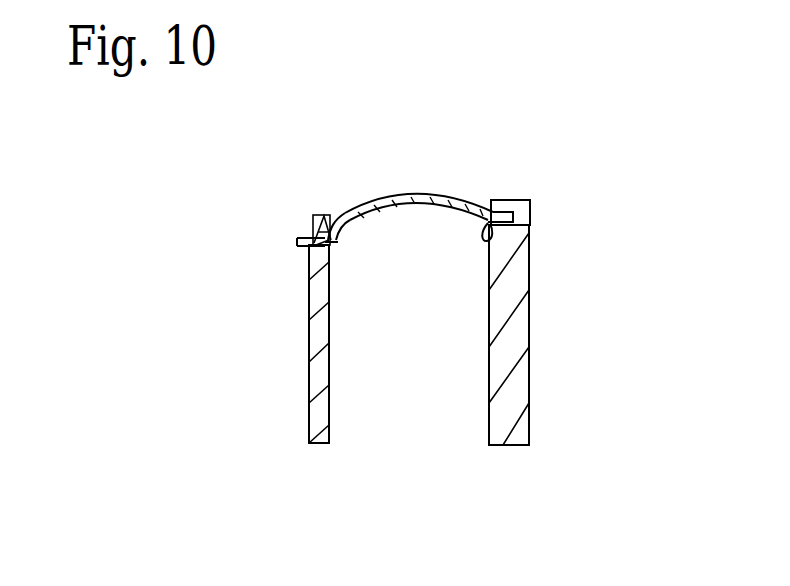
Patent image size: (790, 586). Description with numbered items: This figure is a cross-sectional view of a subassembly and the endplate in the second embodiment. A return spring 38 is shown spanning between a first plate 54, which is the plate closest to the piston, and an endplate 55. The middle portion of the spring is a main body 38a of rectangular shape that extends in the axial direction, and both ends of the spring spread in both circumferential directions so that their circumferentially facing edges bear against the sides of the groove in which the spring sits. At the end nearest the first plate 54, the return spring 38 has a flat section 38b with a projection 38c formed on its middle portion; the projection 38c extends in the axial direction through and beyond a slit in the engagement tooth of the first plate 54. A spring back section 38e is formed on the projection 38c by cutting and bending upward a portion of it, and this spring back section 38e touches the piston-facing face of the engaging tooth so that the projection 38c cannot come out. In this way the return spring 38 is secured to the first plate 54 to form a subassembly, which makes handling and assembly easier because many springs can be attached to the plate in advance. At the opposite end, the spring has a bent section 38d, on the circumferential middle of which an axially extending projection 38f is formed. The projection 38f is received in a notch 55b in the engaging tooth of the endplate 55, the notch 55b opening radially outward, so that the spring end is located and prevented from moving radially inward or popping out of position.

The return spring 38 is at (450, 223).
The main body 38a is at (412, 208).
The flat section 38b is at (337, 258).
The projection 38c is at (322, 215).
The bent section 38d is at (484, 234).
The spring back section 38e is at (306, 240).
The projection 38f is at (508, 200).
The first plate 54 is at (272, 338).
The endplate 55 is at (547, 295).
The notch 55b is at (520, 212).